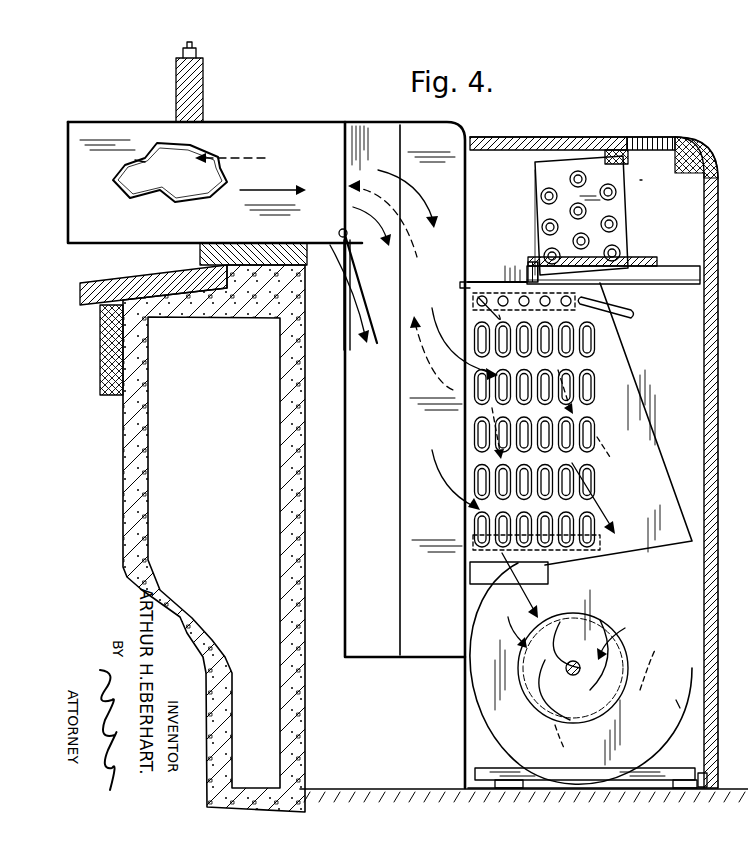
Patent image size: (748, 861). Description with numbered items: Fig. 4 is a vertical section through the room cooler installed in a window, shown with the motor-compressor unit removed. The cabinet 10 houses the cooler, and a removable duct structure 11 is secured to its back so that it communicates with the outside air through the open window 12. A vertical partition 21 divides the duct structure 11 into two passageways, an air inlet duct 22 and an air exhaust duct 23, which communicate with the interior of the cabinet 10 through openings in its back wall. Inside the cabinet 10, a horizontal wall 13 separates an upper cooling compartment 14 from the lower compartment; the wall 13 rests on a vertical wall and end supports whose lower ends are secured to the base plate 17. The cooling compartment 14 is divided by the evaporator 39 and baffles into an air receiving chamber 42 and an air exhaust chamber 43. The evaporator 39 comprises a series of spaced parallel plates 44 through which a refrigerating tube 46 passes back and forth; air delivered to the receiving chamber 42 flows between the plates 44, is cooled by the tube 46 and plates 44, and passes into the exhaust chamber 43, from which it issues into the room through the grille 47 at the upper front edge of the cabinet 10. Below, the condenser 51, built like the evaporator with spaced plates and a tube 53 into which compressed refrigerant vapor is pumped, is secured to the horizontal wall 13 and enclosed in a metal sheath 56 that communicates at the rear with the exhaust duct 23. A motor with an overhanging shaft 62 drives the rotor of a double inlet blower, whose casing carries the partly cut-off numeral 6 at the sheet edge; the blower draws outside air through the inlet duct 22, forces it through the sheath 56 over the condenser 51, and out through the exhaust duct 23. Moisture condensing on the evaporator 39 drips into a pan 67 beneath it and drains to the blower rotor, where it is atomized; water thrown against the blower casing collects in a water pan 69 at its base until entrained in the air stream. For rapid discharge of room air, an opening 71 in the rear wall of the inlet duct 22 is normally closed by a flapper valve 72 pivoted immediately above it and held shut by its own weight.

The cabinet 10 is at (718, 391).
The removable duct structure 11 is at (328, 122).
The window 12 is at (205, 96).
The horizontal wall 13 is at (672, 285).
The cooling compartment 14 is at (508, 160).
The base plate 17 is at (580, 792).
The vertical partition 21 is at (203, 152).
The air inlet duct 22 is at (255, 133).
The air exhaust duct 23 is at (140, 165).
The evaporator 39 is at (593, 194).
The air receiving chamber 42 is at (502, 222).
The air exhaust chamber 43 is at (665, 202).
The parallel plates 44 is at (535, 181).
The refrigerating tube 46 is at (612, 190).
The grille 47 is at (655, 137).
The condenser 51 is at (534, 421).
The condenser tube 53 is at (595, 435).
The metal sheath 56 is at (598, 363).
The overhanging shaft 62 is at (578, 676).
The blower housing 6 is at (676, 705).
The pan 67 is at (656, 262).
The water pan 69 is at (518, 788).
The opening 71 is at (344, 322).
The flapper valve 72 is at (362, 297).